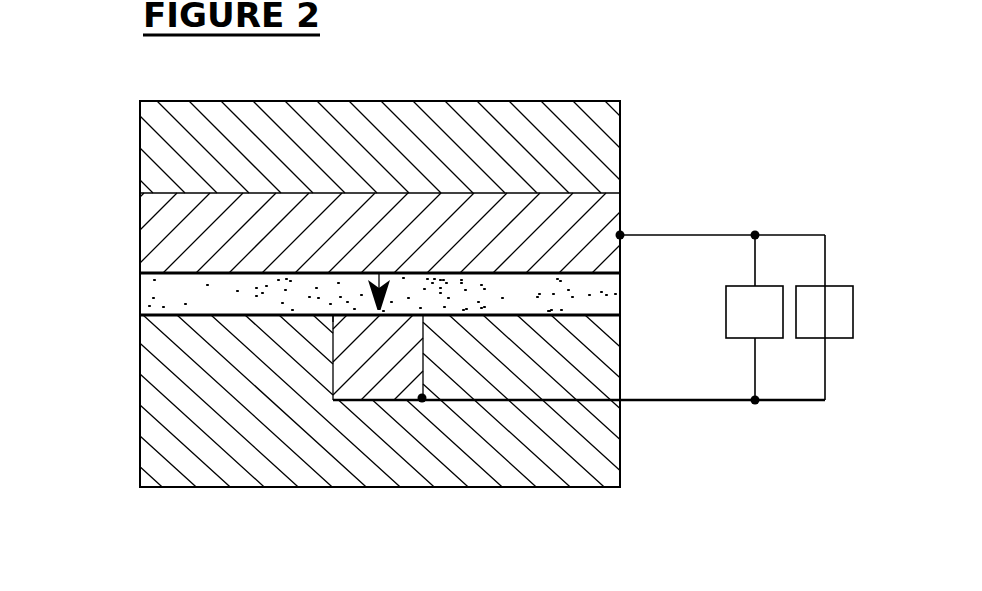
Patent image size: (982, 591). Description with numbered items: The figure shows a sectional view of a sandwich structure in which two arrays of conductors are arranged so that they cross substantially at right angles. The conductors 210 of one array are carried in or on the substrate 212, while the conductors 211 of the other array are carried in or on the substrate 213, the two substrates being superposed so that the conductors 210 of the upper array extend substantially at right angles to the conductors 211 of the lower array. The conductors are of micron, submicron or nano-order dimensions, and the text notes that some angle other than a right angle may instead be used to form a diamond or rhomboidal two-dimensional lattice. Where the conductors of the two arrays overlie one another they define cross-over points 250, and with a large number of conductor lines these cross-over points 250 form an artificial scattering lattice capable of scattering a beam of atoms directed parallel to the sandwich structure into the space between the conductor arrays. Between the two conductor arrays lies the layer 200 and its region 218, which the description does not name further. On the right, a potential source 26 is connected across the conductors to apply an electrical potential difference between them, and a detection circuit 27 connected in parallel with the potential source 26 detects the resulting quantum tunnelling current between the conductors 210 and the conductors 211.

The substrate 212 is at (177, 146).
The conductors 210 is at (175, 232).
The intermediate layer 200 is at (372, 297).
The intermediate layer region 218 is at (583, 293).
The substrate 213 is at (560, 451).
The conductors 211 is at (379, 400).
The cross-over points 250 is at (323, 323).
The detection circuit 27 is at (739, 324).
The potential source 26 is at (809, 324).